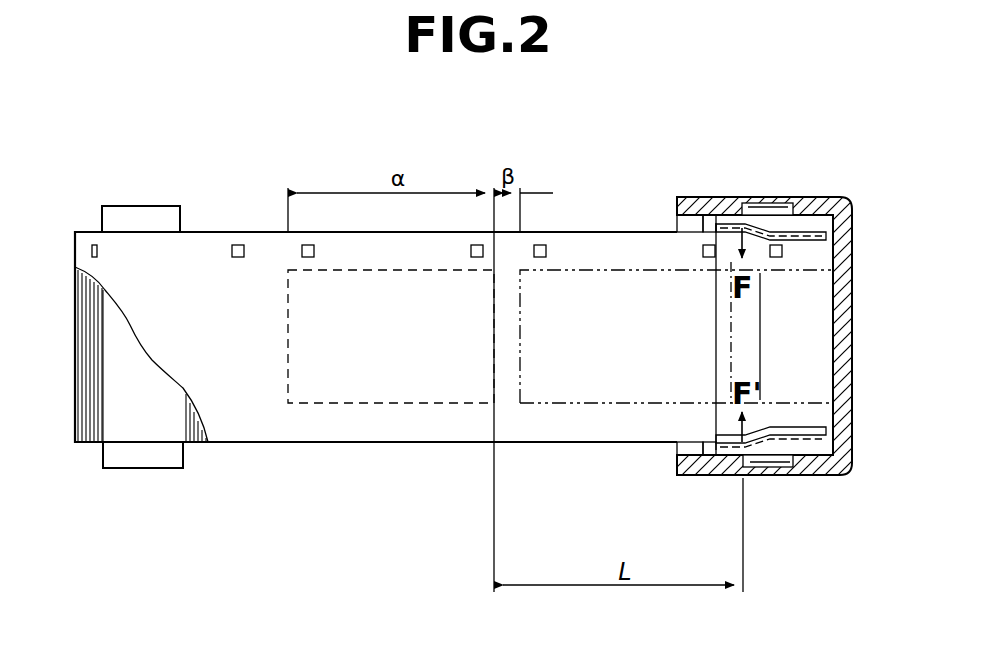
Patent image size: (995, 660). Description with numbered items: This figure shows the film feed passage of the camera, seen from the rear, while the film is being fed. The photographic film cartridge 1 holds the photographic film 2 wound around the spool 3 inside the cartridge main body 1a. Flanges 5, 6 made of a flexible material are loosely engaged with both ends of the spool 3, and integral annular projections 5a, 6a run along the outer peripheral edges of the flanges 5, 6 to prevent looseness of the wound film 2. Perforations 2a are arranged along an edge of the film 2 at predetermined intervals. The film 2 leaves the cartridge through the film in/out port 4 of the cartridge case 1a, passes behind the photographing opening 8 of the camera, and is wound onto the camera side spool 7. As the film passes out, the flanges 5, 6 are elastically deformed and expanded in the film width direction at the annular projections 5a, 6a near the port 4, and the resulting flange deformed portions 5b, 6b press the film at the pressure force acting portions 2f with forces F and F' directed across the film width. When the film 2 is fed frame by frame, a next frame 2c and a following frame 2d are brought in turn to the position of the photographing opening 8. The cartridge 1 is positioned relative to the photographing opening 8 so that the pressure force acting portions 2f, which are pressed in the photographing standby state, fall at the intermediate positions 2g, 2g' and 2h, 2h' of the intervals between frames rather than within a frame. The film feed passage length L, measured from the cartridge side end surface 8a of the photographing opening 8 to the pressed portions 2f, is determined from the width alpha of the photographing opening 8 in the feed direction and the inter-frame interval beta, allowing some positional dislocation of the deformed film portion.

The photographic film cartridge 1 is at (710, 182).
The cartridge main body 1a is at (690, 207).
The photographic film 2 is at (610, 232).
The perforations 2a is at (232, 248).
The next frame 2c is at (617, 403).
The following frame 2d is at (757, 476).
The pressure force acting portion 2f is at (726, 222).
The intermediate position 2g is at (549, 222).
The intermediate position 2g' is at (532, 466).
The intermediate position 2h is at (258, 195).
The intermediate position 2h' is at (245, 475).
The spool 3 is at (775, 207).
The film in/out port 4 is at (680, 217).
The flange 5 is at (818, 215).
The annular projection 5a is at (848, 210).
The flange deformed portion 5b is at (757, 207).
The flange 6 is at (832, 466).
The annular projection 6a is at (798, 470).
The flange deformed portion 6b is at (735, 476).
The camera side spool 7 is at (140, 206).
The photographing opening 8 is at (372, 403).
The cartridge side end surface 8a is at (492, 365).